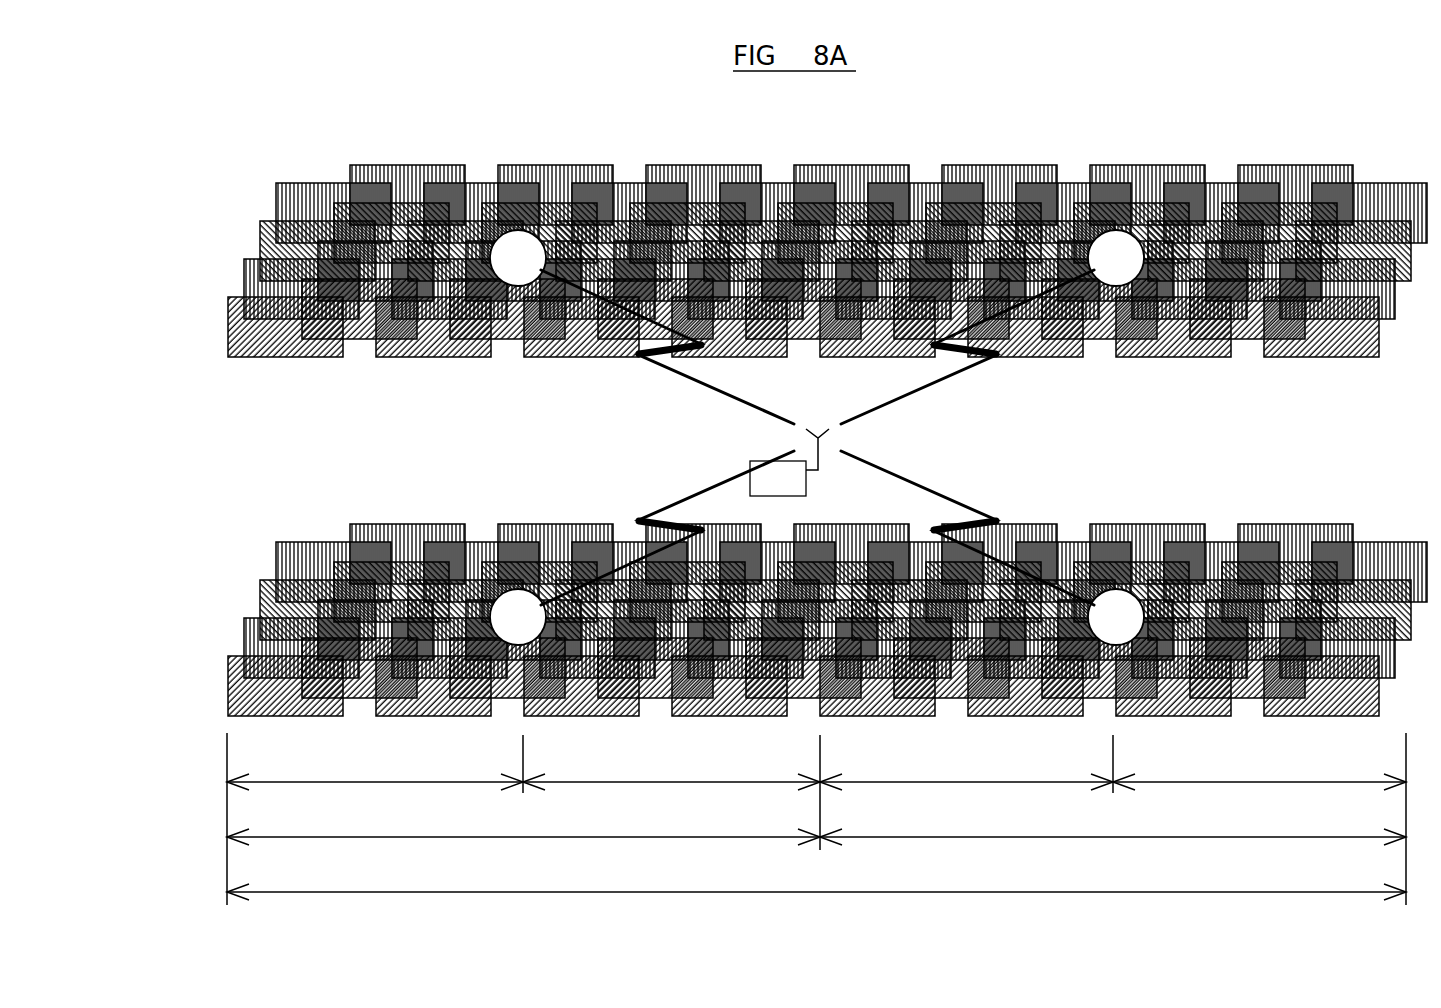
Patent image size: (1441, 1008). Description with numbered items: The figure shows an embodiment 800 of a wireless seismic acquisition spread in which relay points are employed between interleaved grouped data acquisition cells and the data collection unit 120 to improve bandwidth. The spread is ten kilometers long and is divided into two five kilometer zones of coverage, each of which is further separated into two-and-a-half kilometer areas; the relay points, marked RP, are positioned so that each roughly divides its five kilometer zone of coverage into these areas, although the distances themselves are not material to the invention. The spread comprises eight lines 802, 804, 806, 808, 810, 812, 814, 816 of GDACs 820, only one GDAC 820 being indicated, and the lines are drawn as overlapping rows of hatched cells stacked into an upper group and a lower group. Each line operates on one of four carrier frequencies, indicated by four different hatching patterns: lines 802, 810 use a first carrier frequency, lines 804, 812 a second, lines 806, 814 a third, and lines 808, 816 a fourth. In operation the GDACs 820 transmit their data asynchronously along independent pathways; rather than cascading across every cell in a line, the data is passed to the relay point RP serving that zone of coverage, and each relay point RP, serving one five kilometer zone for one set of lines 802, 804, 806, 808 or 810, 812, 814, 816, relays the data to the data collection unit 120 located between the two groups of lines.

The embodiment 800 is at (213, 92).
The line 802 is at (267, 178).
The line 804 is at (252, 217).
The line 806 is at (237, 255).
The line 808 is at (218, 295).
The line 810 is at (267, 537).
The line 812 is at (252, 576).
The line 814 is at (237, 614).
The line 816 is at (218, 654).
The GDAC 820 is at (343, 157).
The data collection unit 120 is at (740, 455).